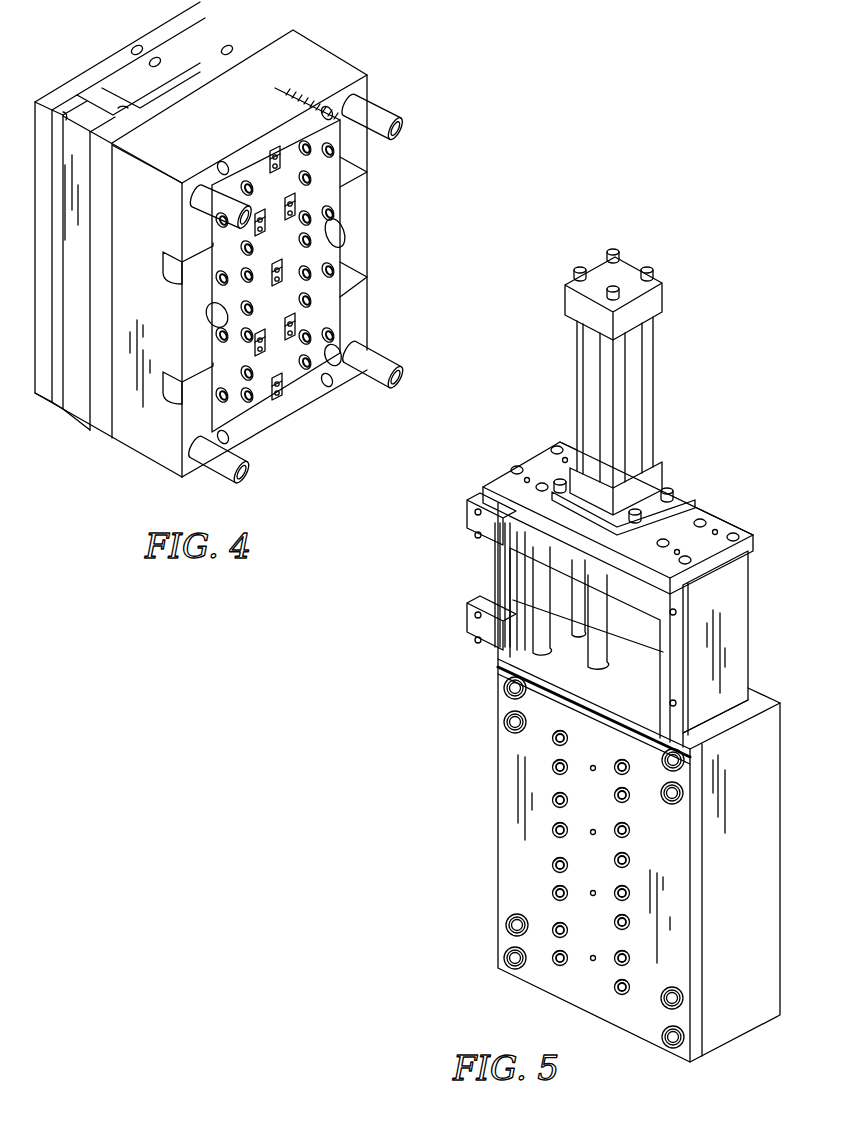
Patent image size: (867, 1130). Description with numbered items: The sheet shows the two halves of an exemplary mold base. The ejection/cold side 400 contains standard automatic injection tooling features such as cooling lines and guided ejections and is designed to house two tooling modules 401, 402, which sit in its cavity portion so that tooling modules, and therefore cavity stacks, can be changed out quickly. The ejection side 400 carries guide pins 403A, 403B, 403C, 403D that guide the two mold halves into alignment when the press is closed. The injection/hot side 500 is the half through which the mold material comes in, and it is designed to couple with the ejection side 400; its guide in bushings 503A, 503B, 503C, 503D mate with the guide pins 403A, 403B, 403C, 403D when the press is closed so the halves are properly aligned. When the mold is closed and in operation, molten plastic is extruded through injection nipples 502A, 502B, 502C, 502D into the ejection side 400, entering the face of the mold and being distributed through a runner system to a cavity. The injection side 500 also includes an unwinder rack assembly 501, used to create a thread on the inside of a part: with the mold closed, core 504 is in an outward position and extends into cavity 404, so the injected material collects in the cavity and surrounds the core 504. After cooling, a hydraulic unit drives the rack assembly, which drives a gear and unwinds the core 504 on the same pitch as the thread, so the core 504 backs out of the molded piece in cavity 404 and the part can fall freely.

In FIG. 4, the ejection side 400 is at (369, 27).
In FIG. 4, the tooling module 401 is at (323, 184).
In FIG. 4, the tooling module 402 is at (323, 303).
In FIG. 4, the guide pin 403A is at (205, 206).
In FIG. 4, the guide pin 403B is at (217, 470).
In FIG. 4, the guide pin 403C is at (385, 368).
In FIG. 4, the guide pin 403D is at (383, 110).
In FIG. 4, the cavity 404 is at (310, 218).
In FIG. 5, the injection side 500 is at (697, 474).
In FIG. 5, the unwinder rack assembly 501 is at (732, 607).
In FIG. 5, the injection nipple 502A is at (590, 770).
In FIG. 5, the injection nipple 502B is at (590, 833).
In FIG. 5, the injection nipple 502C is at (590, 893).
In FIG. 5, the injection nipple 502D is at (590, 960).
In FIG. 5, the guide in bushing 503A is at (688, 763).
In FIG. 5, the guide in bushing 503B is at (670, 1042).
In FIG. 5, the guide in bushing 503C is at (508, 965).
In FIG. 5, the guide in bushing 503D is at (508, 692).
In FIG. 5, the core 504 is at (633, 855).